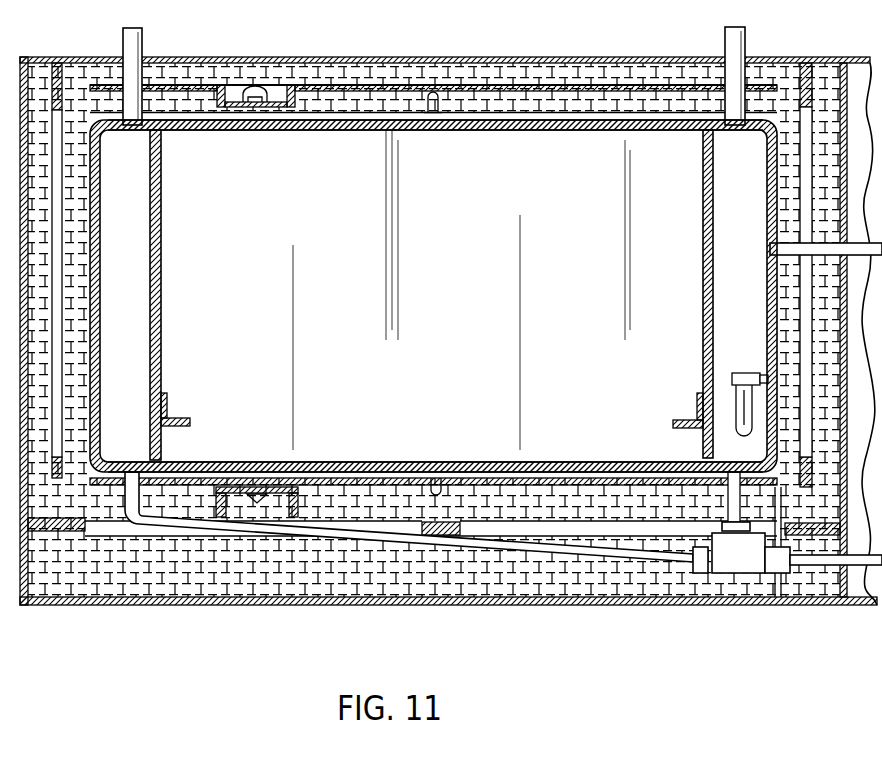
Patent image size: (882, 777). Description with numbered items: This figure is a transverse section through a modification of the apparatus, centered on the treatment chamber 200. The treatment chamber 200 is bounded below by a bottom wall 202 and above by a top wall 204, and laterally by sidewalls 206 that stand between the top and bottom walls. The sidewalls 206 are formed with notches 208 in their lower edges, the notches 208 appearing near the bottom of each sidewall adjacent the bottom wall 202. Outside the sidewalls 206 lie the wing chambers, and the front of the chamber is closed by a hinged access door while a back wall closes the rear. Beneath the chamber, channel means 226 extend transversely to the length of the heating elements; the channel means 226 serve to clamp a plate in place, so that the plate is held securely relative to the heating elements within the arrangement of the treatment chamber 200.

The treatment chamber 200 is at (480, 318).
The bottom wall 202 is at (482, 462).
The top wall 204 is at (467, 131).
The sidewalls 206 is at (162, 248).
The notches 208 is at (160, 450).
The channel means 226 is at (295, 512).